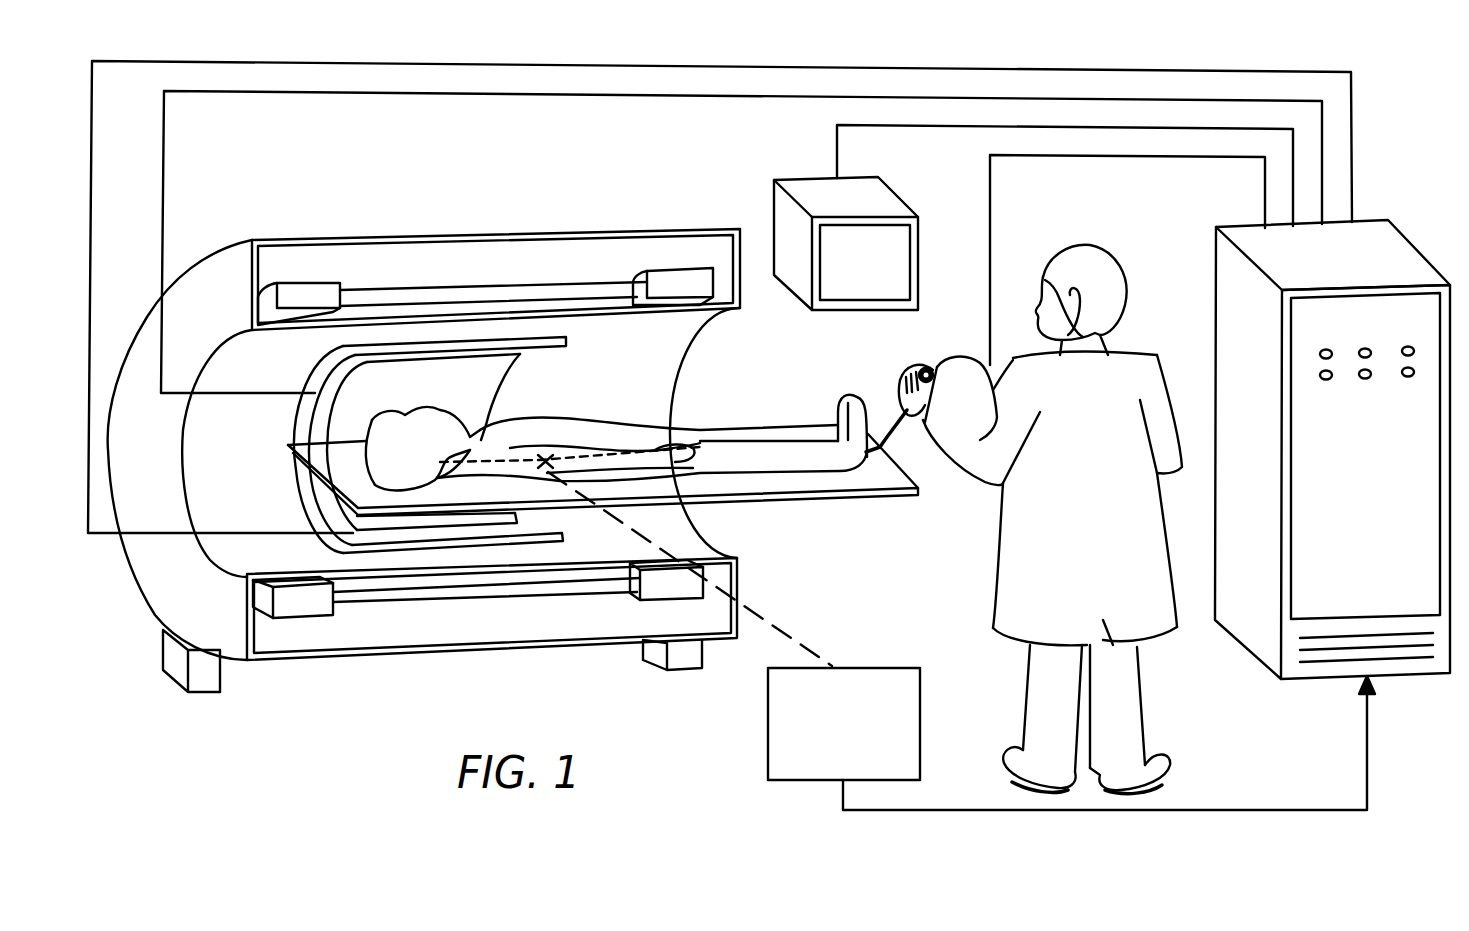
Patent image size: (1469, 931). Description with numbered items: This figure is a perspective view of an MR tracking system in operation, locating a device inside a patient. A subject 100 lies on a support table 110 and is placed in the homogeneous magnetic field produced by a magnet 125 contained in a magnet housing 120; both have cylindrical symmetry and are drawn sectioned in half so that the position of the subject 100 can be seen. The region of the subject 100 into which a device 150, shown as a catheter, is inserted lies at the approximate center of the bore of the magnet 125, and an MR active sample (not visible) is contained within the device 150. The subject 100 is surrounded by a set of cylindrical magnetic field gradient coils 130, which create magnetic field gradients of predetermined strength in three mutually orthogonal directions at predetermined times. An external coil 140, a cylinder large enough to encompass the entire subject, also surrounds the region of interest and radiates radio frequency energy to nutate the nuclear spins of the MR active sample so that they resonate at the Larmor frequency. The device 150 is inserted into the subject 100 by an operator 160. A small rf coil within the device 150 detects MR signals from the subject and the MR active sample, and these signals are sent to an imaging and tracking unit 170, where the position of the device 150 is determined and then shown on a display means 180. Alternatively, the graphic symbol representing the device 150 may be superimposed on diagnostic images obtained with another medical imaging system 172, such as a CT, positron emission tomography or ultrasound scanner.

The subject 100 is at (862, 398).
The support table 110 is at (803, 495).
The magnet housing 120 is at (558, 232).
The magnet 125 is at (508, 298).
The magnetic field gradient coils 130 is at (548, 362).
The external coil 140 is at (333, 392).
The device 150 is at (755, 420).
The operator 160 is at (997, 603).
The imaging and tracking unit 170 is at (1265, 645).
The medical imaging system 172 is at (920, 718).
The display means 180 is at (885, 203).